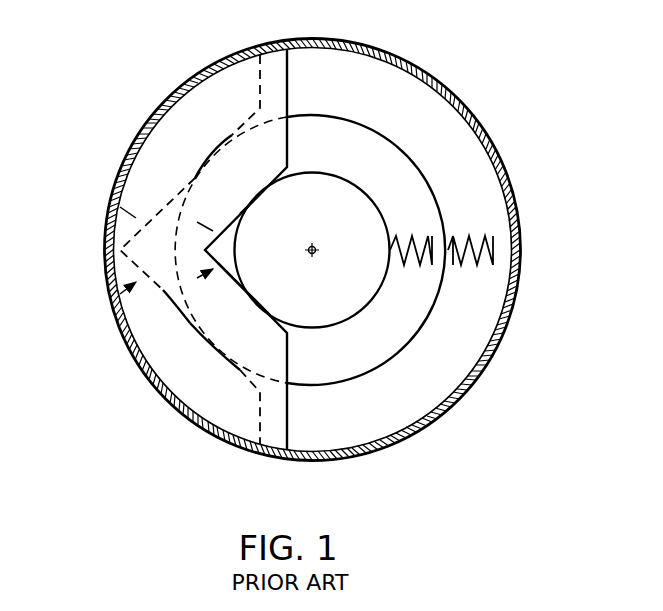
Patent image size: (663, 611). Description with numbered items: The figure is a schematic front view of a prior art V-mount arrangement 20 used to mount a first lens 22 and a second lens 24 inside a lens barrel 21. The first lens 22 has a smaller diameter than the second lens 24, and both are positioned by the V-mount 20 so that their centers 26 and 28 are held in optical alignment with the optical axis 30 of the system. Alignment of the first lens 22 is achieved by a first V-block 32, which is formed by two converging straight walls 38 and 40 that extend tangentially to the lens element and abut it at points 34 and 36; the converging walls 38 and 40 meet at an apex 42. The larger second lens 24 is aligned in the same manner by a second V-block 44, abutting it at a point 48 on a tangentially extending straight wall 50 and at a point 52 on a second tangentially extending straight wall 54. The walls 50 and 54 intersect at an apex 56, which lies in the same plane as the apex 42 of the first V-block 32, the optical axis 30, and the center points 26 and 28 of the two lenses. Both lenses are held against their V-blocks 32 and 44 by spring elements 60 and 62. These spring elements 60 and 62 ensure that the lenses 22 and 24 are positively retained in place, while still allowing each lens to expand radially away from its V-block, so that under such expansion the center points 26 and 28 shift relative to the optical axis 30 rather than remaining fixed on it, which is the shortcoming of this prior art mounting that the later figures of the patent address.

The V-mount arrangement 20 is at (239, 93).
The lens barrel 21 is at (488, 135).
The first lens 22 is at (352, 300).
The second lens 24 is at (392, 360).
The center of first lens 26 is at (315, 257).
The center of second lens 28 is at (309, 252).
The optical axis 30 is at (317, 248).
The first V-block 32 is at (278, 128).
The abutment point 34 is at (272, 182).
The abutment point 36 is at (261, 308).
The converging straight wall 38 is at (238, 214).
The converging straight wall 40 is at (226, 270).
The apex 42 is at (205, 250).
The V-block 44 is at (242, 420).
The abutment point 48 is at (222, 142).
The tangentially extending straight wall 50 is at (193, 173).
The abutment point 52 is at (215, 354).
The tangentially extending straight wall 54 is at (172, 305).
The apex 56 is at (118, 252).
The spring element 60 is at (411, 233).
The spring element 62 is at (472, 233).